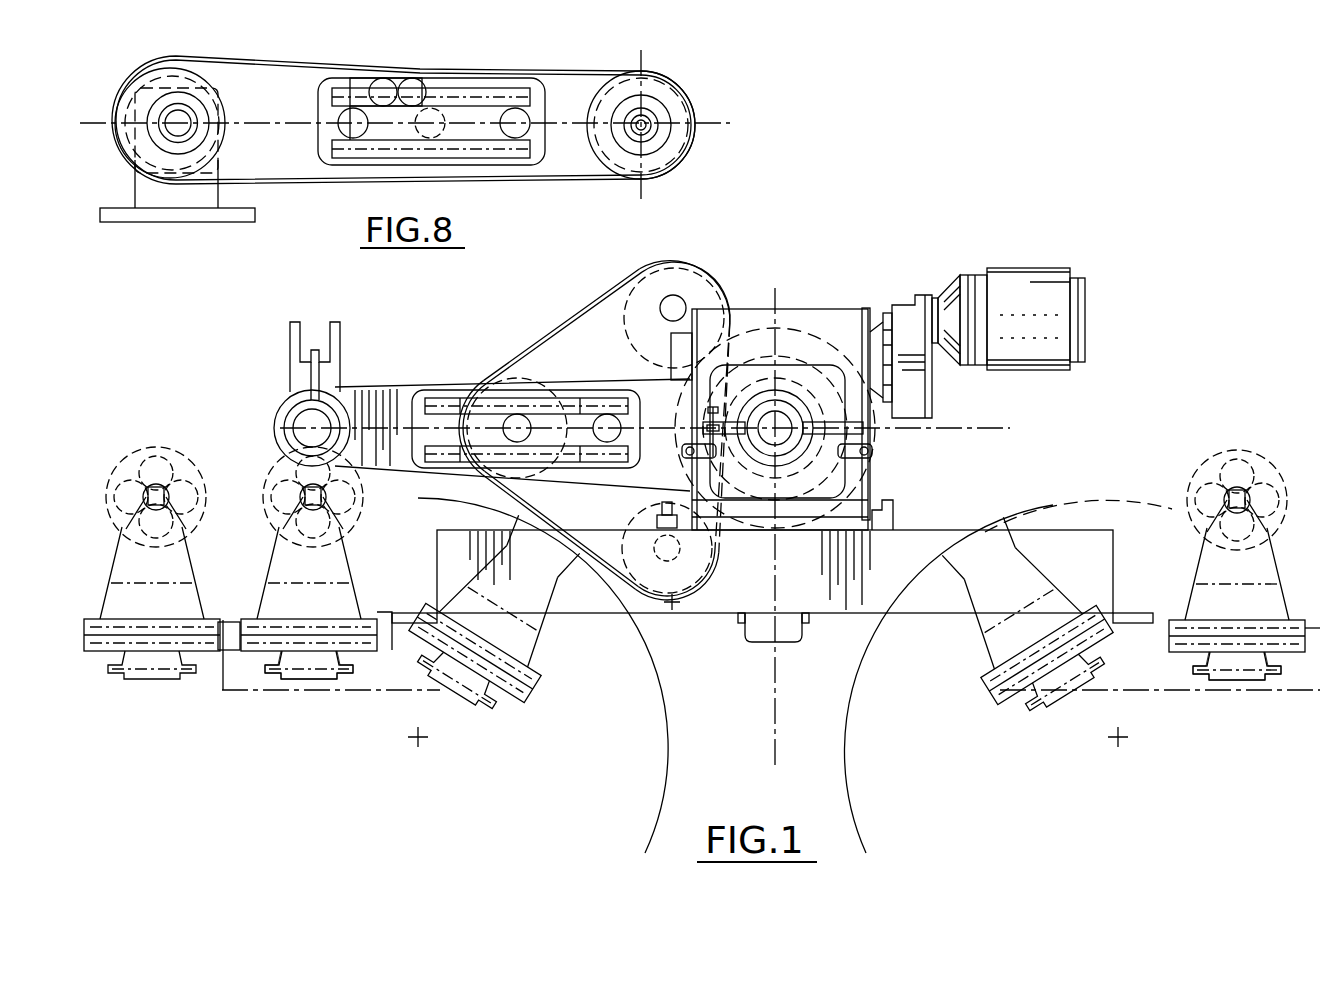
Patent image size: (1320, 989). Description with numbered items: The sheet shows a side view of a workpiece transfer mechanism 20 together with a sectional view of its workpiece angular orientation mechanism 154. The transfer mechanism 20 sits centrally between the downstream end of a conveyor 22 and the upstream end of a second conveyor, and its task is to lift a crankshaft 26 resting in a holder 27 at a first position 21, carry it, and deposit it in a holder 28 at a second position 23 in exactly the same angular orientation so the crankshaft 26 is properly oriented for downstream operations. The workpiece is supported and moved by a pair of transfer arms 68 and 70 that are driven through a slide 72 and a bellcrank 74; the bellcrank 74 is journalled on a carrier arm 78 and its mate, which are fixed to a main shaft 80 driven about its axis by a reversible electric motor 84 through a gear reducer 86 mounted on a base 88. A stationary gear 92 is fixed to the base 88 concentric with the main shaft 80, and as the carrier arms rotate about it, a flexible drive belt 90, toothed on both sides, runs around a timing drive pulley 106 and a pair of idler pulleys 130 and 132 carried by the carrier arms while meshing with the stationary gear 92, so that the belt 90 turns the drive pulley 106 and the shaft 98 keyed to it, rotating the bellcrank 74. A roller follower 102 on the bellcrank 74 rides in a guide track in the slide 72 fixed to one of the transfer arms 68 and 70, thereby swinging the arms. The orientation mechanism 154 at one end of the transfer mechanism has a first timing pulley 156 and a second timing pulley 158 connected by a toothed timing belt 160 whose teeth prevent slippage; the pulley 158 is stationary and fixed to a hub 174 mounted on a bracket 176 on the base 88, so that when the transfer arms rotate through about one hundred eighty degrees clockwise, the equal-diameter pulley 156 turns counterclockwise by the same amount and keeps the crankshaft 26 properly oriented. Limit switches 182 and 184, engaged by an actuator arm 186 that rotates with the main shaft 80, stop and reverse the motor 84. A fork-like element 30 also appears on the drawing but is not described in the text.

In FIG. 1, the workpiece transfer mechanism 20 is at (882, 228).
In FIG. 1, the first position 21 is at (316, 688).
In FIG. 1, the conveyor 22 is at (155, 706).
In FIG. 1, the second position 23 is at (1248, 692).
In FIG. 1, the crankshaft 26 is at (143, 450).
In FIG. 1, the holder 27 is at (354, 568).
In FIG. 1, the holder 28 is at (1278, 586).
In FIG. 1, the fork assembly 30 is at (348, 326).
In FIG. 8, the transfer arm 68 is at (285, 82).
In FIG. 1, the transfer arm 70 is at (371, 388).
In FIG. 8, the slide 72 is at (508, 156).
In FIG. 1, the slide 72 is at (440, 396).
In FIG. 8, the bellcrank 74 is at (320, 150).
In FIG. 1, the bellcrank 74 is at (584, 404).
In FIG. 1, the carrier arm 78 is at (591, 319).
In FIG. 1, the main shaft 80 is at (873, 431).
In FIG. 1, the reversible electric motor 84 is at (1030, 270).
In FIG. 1, the gear reducer 86 is at (820, 312).
In FIG. 1, the base 88 is at (922, 538).
In FIG. 1, the flexible drive belt 90 is at (650, 282).
In FIG. 1, the stationary gear 92 is at (878, 432).
In FIG. 1, the shaft 98 is at (532, 418).
In FIG. 1, the roller follower 102 is at (620, 421).
In FIG. 1, the timing drive pulley 106 is at (546, 350).
In FIG. 1, the idler pulley 130 is at (668, 263).
In FIG. 1, the idler pulley 132 is at (675, 606).
In FIG. 8, the workpiece angular orientation mechanism 154 is at (548, 56).
In FIG. 8, the first timing pulley 156 is at (684, 112).
In FIG. 8, the second timing pulley 158 is at (142, 86).
In FIG. 8, the toothed timing belt 160 is at (618, 82).
In FIG. 8, the hub 174 is at (190, 104).
In FIG. 8, the bracket 176 is at (138, 196).
In FIG. 1, the limit switch 182 is at (720, 522).
In FIG. 1, the limit switch 184 is at (858, 459).
In FIG. 1, the actuator arm 186 is at (723, 400).